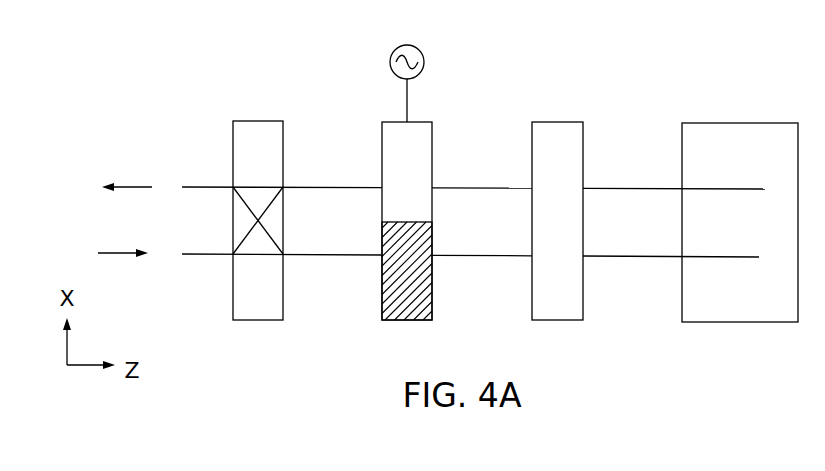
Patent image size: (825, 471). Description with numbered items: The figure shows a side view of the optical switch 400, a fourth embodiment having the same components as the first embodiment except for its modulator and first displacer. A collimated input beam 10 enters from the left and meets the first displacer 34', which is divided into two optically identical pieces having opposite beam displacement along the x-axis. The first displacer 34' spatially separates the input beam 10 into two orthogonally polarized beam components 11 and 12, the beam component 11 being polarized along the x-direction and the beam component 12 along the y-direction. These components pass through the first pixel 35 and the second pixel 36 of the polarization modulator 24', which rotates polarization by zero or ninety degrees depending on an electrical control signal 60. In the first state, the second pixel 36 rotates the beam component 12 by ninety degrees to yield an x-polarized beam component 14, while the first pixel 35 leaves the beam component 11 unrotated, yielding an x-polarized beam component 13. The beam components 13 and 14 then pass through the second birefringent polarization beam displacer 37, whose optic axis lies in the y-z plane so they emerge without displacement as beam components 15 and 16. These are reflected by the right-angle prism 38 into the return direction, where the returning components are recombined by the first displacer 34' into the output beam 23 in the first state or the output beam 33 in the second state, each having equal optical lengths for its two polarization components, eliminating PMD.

The optical switch 400 is at (168, 62).
The input beam 10 is at (101, 253).
The beam component 11 is at (302, 186).
The beam component 12 is at (332, 256).
The beam component 13 is at (496, 187).
The beam component 14 is at (480, 257).
The beam component 15 is at (630, 188).
The beam component 16 is at (632, 257).
The output beam 23 is at (95, 188).
The output beam 33 is at (95, 188).
The polarization modulator 24' is at (416, 220).
The first displacer 34' is at (258, 184).
The first pixel 35 is at (382, 140).
The second pixel 36 is at (410, 288).
The second birefringent polarization beam displacer 37 is at (558, 122).
The right-angle prism 38 is at (741, 123).
The electrical control signal 60 is at (419, 50).